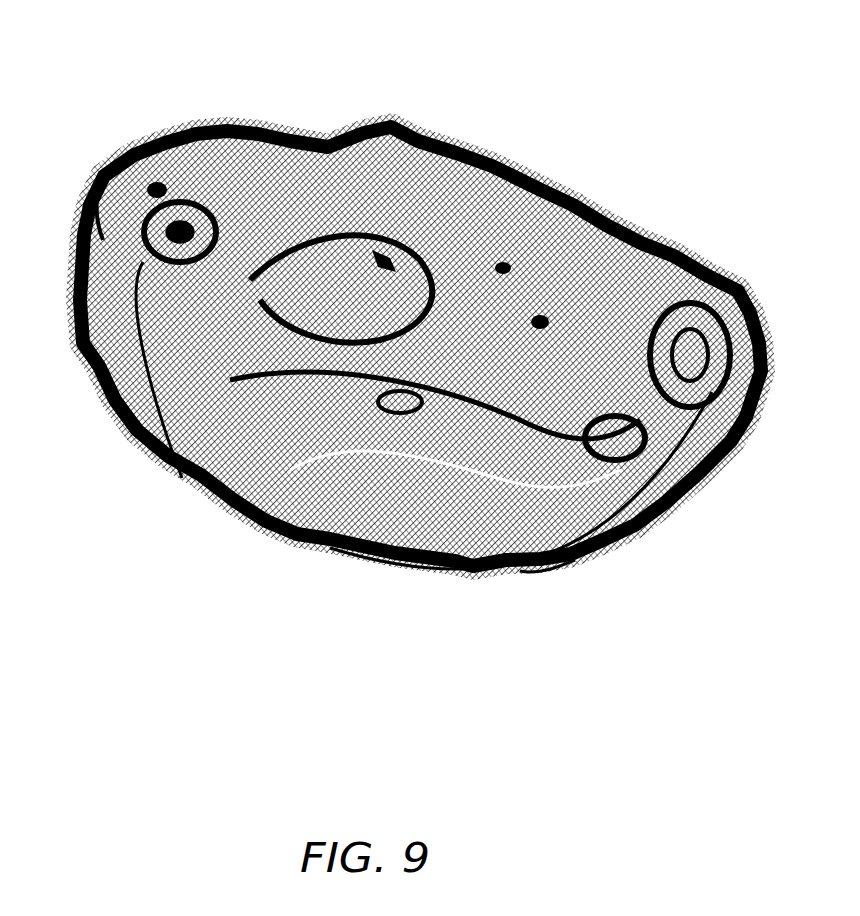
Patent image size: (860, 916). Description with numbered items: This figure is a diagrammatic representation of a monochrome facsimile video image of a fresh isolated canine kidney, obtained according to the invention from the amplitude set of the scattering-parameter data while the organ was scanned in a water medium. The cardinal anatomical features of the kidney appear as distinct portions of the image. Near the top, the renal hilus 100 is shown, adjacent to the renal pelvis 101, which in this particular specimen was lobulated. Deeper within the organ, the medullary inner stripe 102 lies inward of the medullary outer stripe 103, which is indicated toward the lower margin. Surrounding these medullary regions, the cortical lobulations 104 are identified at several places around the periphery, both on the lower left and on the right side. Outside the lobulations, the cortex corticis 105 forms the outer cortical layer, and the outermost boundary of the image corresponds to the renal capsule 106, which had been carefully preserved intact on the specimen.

The renal hilus portion 100 is at (452, 147).
The renal pelvis portion 101 is at (463, 159).
The medullary inner stripe portion 102 is at (535, 318).
The medullary outer stripe portion 103 is at (550, 560).
The cortical lobulations portion 104 is at (783, 525).
The cortex corticis portion 105 is at (157, 187).
The renal capsule portion 106 is at (103, 183).